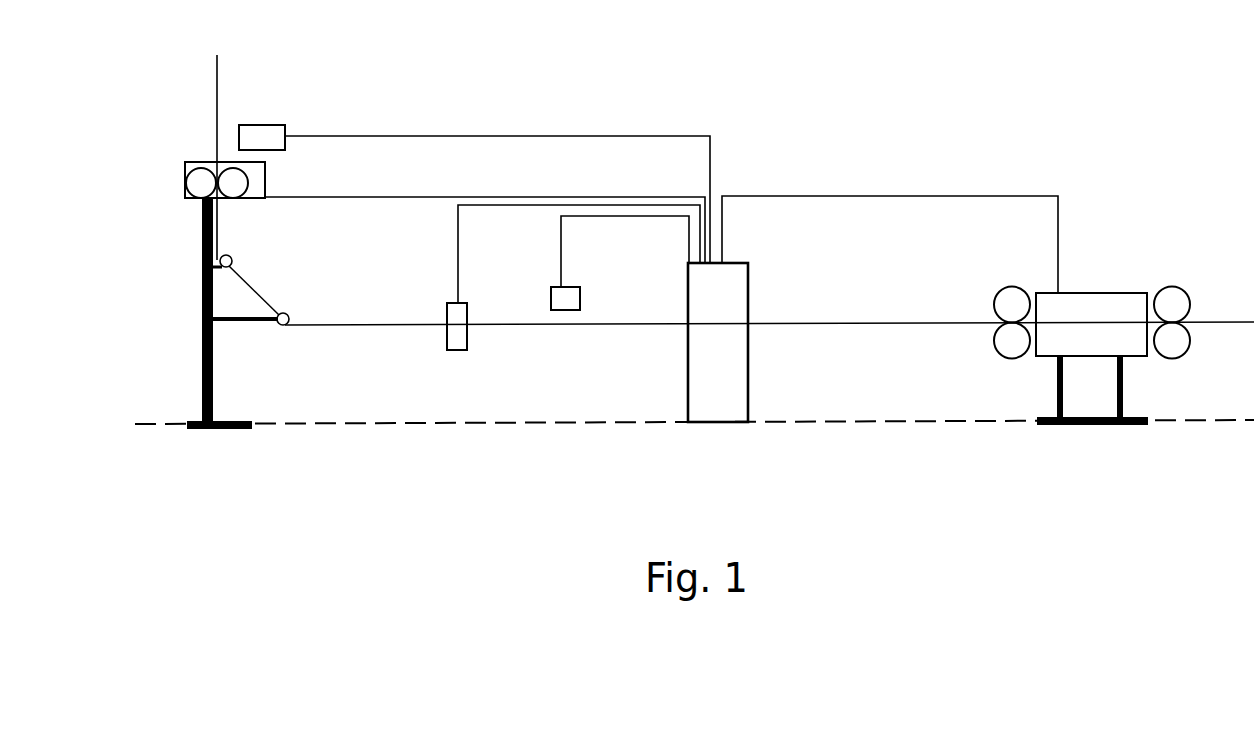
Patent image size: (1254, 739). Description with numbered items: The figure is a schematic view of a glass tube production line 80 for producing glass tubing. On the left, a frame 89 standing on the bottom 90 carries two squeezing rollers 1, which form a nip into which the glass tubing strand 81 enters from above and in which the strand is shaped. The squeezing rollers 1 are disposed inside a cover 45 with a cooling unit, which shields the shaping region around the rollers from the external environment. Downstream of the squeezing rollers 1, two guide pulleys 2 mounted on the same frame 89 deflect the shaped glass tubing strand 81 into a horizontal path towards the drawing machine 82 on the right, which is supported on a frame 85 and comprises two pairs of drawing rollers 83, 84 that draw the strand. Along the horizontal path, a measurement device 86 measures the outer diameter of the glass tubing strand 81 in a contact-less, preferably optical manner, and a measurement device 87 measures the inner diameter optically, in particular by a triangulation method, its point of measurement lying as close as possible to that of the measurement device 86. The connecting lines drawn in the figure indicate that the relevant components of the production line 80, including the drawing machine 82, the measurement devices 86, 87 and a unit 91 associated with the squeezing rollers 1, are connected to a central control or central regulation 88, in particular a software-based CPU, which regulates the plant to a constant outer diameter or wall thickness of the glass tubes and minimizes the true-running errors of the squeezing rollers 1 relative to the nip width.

The squeezing rollers 1 is at (242, 183).
The guide pulleys 2 is at (232, 260).
The cover with cooling unit 45 is at (253, 168).
The glass tube production line 80 is at (955, 95).
The glass tubing strand 81 is at (220, 62).
The drawing machine 82 is at (1107, 298).
The pair of drawing rollers 83 is at (1010, 292).
The pair of drawing rollers 84 is at (1173, 290).
The frame 85 is at (1123, 380).
The measurement device for outer diameter 86 is at (457, 343).
The measurement device for inner diameter 87 is at (580, 297).
The central control or central regulation 88 is at (738, 278).
The frame 89 is at (202, 380).
The bottom 90 is at (810, 423).
The drive unit 91 is at (272, 127).